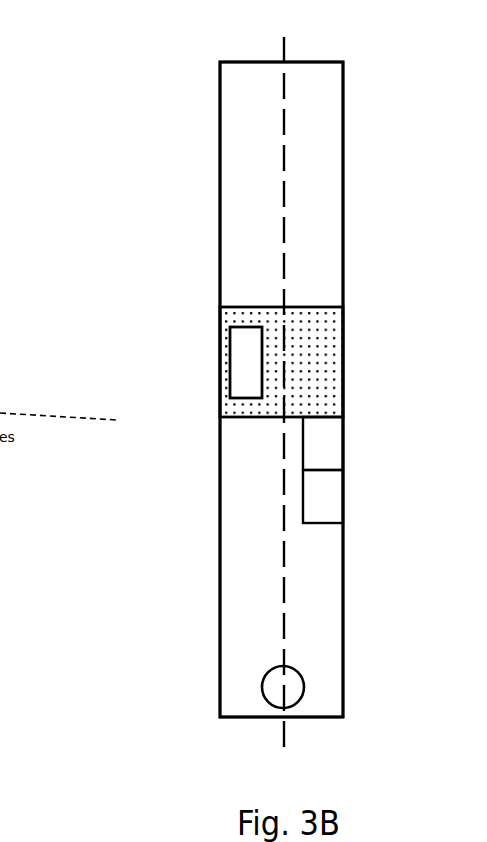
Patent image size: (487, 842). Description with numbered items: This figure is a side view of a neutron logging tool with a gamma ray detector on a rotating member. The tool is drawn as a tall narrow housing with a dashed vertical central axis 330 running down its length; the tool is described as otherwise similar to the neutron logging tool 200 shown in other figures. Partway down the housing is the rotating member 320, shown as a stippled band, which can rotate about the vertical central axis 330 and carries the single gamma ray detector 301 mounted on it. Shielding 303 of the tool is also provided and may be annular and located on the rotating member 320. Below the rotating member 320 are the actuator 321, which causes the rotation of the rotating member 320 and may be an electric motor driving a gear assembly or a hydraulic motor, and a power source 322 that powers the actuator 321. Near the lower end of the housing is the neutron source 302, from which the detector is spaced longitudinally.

The neutron logging tool 200 is at (198, 188).
The gamma ray detector 301 is at (232, 377).
The neutron source 302 is at (292, 703).
The shielding 303 is at (313, 257).
The rotating member 320 is at (343, 375).
The actuator 321 is at (345, 450).
The power source 322 is at (343, 500).
The vertical central axis 330 is at (284, 140).